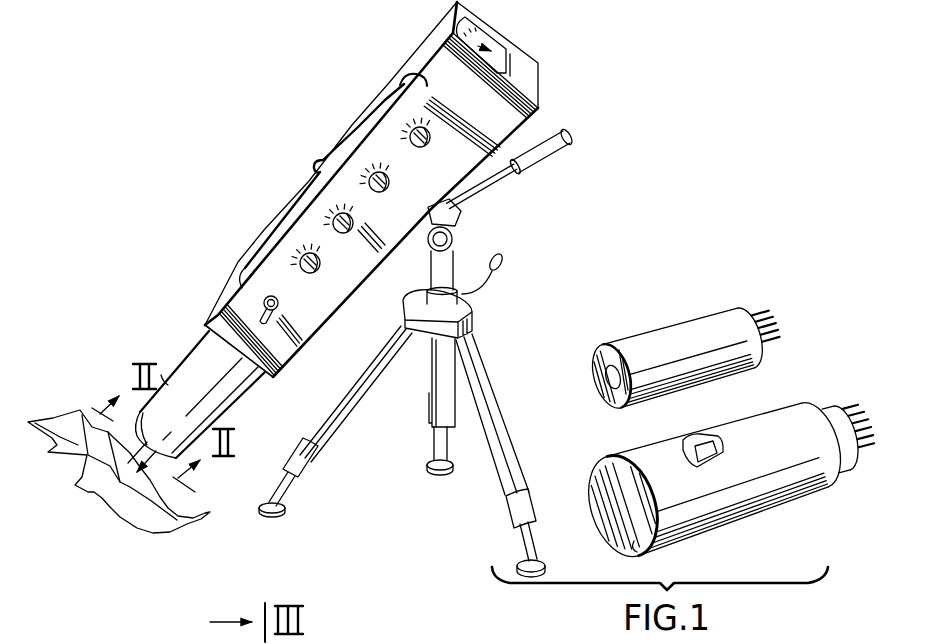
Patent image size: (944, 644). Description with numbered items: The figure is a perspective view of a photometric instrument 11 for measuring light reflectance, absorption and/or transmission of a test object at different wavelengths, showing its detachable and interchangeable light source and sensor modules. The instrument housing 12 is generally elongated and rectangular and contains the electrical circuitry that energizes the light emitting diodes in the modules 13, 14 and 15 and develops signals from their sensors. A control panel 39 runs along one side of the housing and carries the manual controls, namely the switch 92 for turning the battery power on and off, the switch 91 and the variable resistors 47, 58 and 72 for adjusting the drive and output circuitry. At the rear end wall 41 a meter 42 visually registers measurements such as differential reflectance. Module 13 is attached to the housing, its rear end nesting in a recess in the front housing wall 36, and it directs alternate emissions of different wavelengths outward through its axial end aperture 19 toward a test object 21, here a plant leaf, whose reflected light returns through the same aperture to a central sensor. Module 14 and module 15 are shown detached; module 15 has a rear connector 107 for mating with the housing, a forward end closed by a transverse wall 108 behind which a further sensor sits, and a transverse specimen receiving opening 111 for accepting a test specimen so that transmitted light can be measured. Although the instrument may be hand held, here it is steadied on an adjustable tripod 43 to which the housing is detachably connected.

The photometric instrument 11 is at (361, 237).
The instrument housing 12 is at (329, 318).
The light emitting diode and sensor module 13 is at (184, 349).
The light emitting diode and sensor module 14 is at (662, 326).
The light emitting diode and sensor module 15 is at (738, 465).
The axial end aperture 19 is at (166, 371).
The test object 21 is at (100, 508).
The front housing wall 36 is at (265, 378).
The control panel 39 is at (320, 162).
The rear end wall 41 is at (533, 72).
The meter 42 is at (498, 46).
The adjustable tripod 43 is at (498, 318).
The variable resistor 47 is at (350, 231).
The variable resistor 58 is at (386, 190).
The variable resistor 72 is at (426, 147).
The switch 91 is at (316, 272).
The switch 92 is at (268, 321).
The connector 107 is at (866, 454).
The transverse wall 108 is at (637, 544).
The specimen receiving opening 111 is at (686, 437).